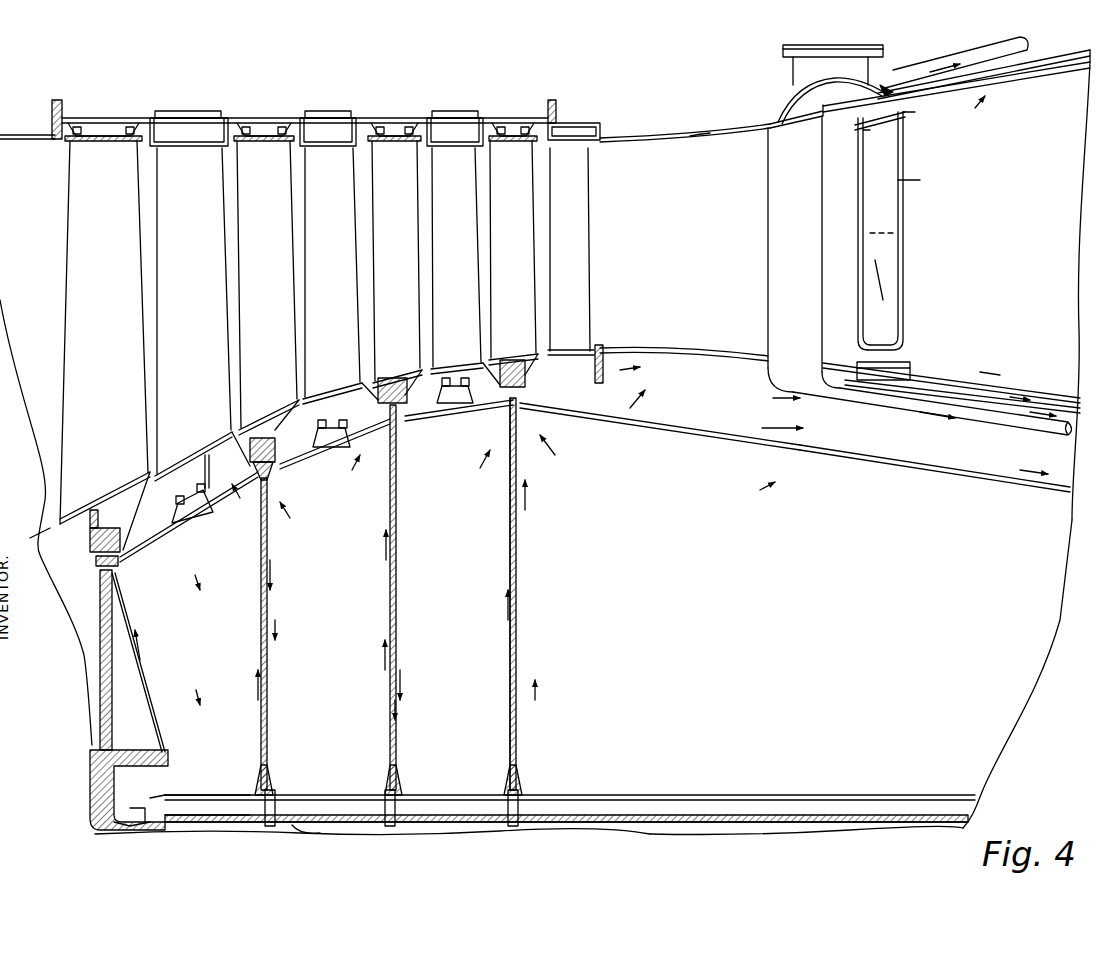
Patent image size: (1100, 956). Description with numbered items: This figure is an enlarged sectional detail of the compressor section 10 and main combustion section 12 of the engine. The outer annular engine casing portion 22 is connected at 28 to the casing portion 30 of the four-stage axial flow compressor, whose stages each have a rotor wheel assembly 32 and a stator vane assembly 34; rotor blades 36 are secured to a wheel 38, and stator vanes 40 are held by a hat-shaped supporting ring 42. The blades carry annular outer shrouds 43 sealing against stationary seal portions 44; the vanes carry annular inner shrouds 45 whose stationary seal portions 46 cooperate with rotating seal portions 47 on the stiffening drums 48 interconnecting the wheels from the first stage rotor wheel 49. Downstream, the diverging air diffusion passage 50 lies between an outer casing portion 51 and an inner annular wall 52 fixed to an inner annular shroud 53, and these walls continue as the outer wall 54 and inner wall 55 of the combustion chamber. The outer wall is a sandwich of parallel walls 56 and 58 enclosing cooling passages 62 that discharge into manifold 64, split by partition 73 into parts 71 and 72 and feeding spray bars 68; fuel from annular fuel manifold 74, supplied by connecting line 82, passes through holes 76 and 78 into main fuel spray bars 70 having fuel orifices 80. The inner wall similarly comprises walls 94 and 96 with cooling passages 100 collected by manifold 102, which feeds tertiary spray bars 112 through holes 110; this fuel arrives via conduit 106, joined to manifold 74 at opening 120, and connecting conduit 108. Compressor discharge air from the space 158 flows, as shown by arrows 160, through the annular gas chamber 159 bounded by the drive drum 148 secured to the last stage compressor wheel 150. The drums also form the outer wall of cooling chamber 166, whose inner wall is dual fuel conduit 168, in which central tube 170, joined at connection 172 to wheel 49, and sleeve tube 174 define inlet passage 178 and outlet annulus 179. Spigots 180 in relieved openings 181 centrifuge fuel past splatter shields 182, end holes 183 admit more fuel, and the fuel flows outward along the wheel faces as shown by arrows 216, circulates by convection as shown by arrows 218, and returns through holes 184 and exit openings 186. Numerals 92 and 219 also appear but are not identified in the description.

The compressor section 10 is at (332, 115).
The main combustion section 12 is at (1080, 228).
The outer annular engine casing portion 22 is at (36, 136).
The casing connection 28 is at (52, 104).
The annular engine casing portion 30 is at (160, 114).
The rotor wheel assembly 32 is at (62, 308).
The stator vane assembly 34 is at (157, 288).
The rotor blades 36 is at (78, 218).
The rotor wheel 38 is at (103, 653).
The stator vanes 40 is at (155, 212).
The supporting ring 42 is at (200, 140).
The annular outer shrouds 43 is at (517, 130).
The stationary seal portions 44 is at (84, 128).
The annular inner shrouds 45 is at (180, 458).
The stationary seal portions 46 is at (200, 478).
The rotating seal portions 47 is at (240, 512).
The stiffening drums 48 is at (135, 560).
The first stage rotor wheel 49 is at (100, 612).
The air diffusion passage 50 is at (712, 135).
The outer engine casing portion 51 is at (650, 136).
The inner annular wall 52 is at (662, 348).
The inner annular shroud 53 is at (578, 352).
The outer wall of combustion chamber 54 is at (1008, 96).
The inner wall of combustion chamber 55 is at (980, 370).
The outer casing wall 56 is at (1020, 48).
The outer liner wall 58 is at (1058, 72).
The cooling passages 62 is at (955, 102).
The annular manifold 64 is at (888, 88).
The spray bars 68 is at (905, 213).
The main fuel spray bars 70 is at (888, 315).
The manifold part 71 is at (872, 115).
The manifold part 72 is at (915, 118).
The partition 73 is at (903, 135).
The annular fuel manifold 74 is at (782, 118).
The holes 76 is at (840, 112).
The holes 78 is at (848, 115).
The fuel orifices 80 is at (903, 190).
The connecting line 82 is at (790, 48).
The flow direction 92 is at (980, 88).
The inner liner wall 94 is at (1010, 378).
The inner wall 96 is at (1046, 390).
The cooling passages 100 is at (935, 370).
The annular fuel manifold 102 is at (872, 395).
The conduit 106 is at (778, 240).
The connecting conduit 108 is at (966, 410).
The holes 110 is at (868, 362).
The tertiary fuel spray bars 112 is at (905, 275).
The opening 120 is at (800, 138).
The annular drum 148 is at (830, 462).
The last stage compressor wheel 150 is at (520, 650).
The space 158 is at (655, 392).
The annular gas chamber 159 is at (906, 466).
The arrows 160 is at (548, 350).
The cooling chamber 166 is at (1032, 700).
The dual fuel conduit 168 is at (703, 798).
The central tube 170 is at (668, 830).
The connection 172 is at (128, 828).
The sleeve tube 174 is at (598, 795).
The hollow passage 178 is at (803, 830).
The annular space 179 is at (735, 802).
The spigots 180 is at (268, 826).
The relieved openings 181 is at (338, 834).
The splatter shield 182 is at (245, 790).
The holes 183 is at (140, 800).
The holes 184 is at (178, 790).
The fuel exit openings 186 is at (292, 805).
The arrows 216 is at (140, 660).
The arrows 218 is at (205, 560).
The flow direction 219 is at (352, 470).